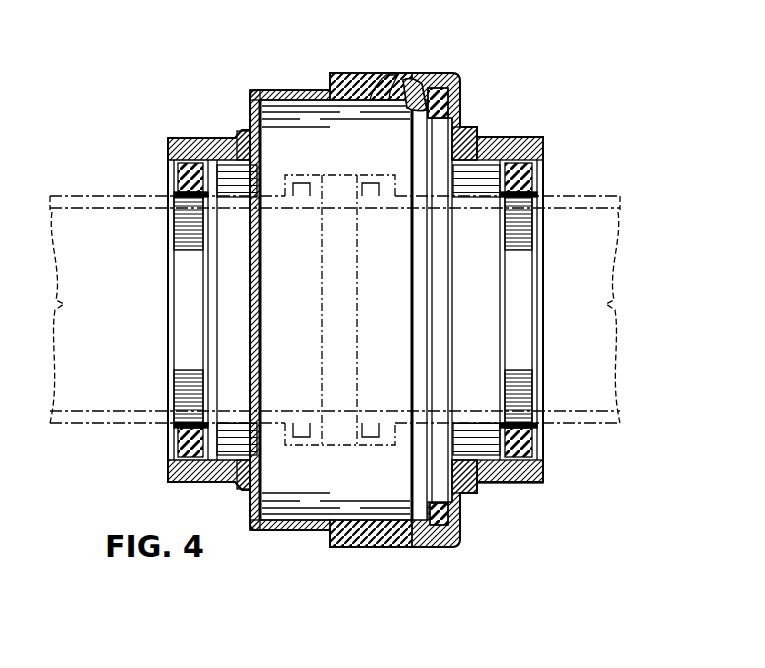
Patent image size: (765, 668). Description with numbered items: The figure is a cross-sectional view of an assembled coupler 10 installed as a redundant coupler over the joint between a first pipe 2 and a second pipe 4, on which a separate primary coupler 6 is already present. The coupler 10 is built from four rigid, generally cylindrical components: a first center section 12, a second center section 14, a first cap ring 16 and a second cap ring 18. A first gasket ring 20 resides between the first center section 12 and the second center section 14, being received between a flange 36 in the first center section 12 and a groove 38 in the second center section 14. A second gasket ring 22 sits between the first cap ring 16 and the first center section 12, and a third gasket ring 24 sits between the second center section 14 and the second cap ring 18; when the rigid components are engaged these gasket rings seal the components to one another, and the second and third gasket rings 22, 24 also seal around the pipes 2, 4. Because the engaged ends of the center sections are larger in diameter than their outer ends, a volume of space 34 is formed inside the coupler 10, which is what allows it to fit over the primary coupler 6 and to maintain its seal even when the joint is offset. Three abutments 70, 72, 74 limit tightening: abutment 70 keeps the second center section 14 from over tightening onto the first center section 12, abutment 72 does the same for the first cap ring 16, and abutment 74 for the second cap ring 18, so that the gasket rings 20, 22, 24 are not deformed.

The pipe 2 is at (117, 196).
The pipe 4 is at (558, 196).
The primary coupler 6 is at (342, 447).
The coupler 10 is at (548, 526).
The first center section 12 is at (290, 89).
The second center section 14 is at (352, 73).
The first cap ring 16 is at (198, 138).
The second cap ring 18 is at (507, 138).
The first gasket ring 20 is at (457, 521).
The second gasket ring 22 is at (168, 450).
The third gasket ring 24 is at (543, 440).
The volume of space 34 is at (363, 132).
The flange 36 is at (413, 88).
The groove 38 is at (442, 88).
The abutment 70 is at (329, 74).
The abutment 72 is at (238, 131).
The abutment 74 is at (476, 130).